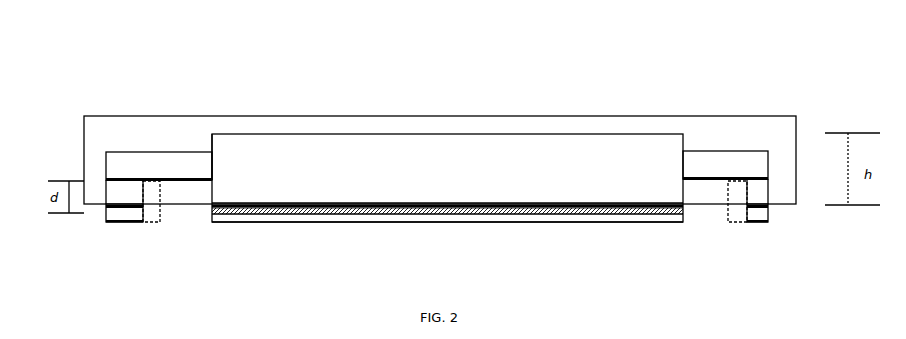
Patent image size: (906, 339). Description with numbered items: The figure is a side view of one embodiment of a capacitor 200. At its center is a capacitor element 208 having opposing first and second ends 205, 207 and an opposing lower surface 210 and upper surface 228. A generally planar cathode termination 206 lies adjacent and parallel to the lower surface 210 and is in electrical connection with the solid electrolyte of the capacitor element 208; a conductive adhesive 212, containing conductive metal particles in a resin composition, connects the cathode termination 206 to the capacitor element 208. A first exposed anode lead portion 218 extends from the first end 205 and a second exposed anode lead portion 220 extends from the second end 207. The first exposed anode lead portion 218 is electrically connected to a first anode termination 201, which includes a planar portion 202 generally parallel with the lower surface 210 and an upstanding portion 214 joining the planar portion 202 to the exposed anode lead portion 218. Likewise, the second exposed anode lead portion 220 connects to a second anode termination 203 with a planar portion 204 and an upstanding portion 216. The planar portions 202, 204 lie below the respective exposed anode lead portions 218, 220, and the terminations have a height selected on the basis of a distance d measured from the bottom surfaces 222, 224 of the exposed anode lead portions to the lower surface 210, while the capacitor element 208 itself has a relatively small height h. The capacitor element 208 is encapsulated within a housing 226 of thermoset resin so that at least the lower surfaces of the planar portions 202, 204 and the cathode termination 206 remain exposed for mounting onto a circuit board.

The capacitor 200 is at (738, 85).
The first anode termination 201 is at (161, 203).
The planar portion 202 is at (122, 222).
The second anode termination 203 is at (712, 202).
The planar portion 204 is at (762, 212).
The first end 205 is at (215, 132).
The cathode termination 206 is at (460, 214).
The second end 207 is at (738, 187).
The capacitor element 208 is at (349, 193).
The lower surface 210 is at (543, 204).
The conductive adhesive 212 is at (601, 208).
The upstanding portion 214 is at (120, 190).
The upstanding portion 216 is at (760, 193).
The first exposed anode lead portion 218 is at (107, 160).
The second exposed anode lead portion 220 is at (743, 163).
The bottom surface 222 is at (115, 178).
The bottom surface 224 is at (728, 178).
The housing 226 is at (481, 122).
The upper surface 228 is at (395, 134).